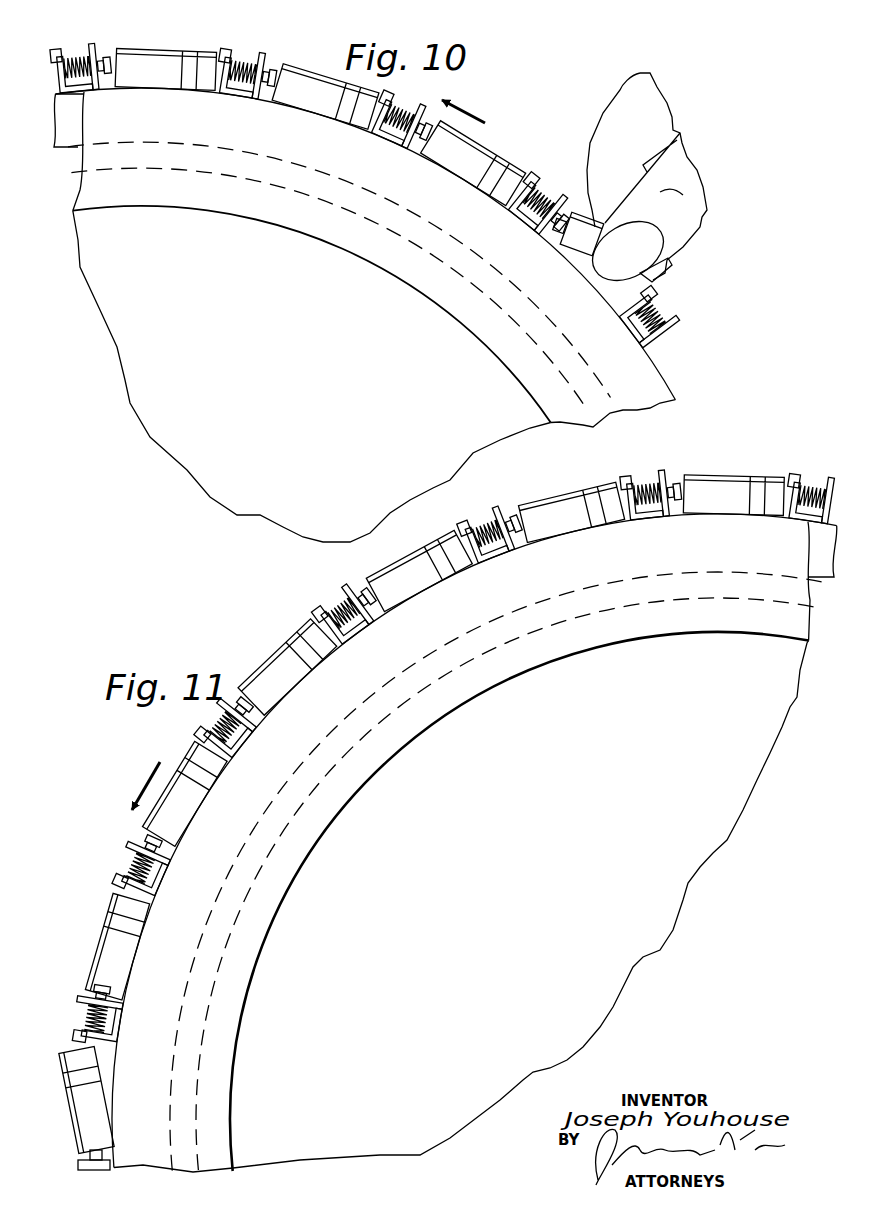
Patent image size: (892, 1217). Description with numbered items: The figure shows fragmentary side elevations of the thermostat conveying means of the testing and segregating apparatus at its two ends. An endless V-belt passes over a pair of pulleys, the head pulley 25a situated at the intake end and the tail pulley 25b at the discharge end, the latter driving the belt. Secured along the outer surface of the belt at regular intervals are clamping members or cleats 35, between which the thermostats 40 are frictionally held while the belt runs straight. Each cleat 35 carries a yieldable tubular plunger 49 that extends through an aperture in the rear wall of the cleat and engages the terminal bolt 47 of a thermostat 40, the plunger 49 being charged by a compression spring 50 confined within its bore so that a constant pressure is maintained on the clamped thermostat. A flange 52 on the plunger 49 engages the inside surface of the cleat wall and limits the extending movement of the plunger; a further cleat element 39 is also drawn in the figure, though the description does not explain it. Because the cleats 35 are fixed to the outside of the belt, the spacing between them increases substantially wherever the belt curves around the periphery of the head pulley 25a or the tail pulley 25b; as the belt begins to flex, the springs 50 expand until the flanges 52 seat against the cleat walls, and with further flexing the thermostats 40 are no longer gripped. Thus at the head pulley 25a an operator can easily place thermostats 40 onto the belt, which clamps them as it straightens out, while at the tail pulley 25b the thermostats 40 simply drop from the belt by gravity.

In FIG. 10, the head pulley 25a is at (453, 190).
In FIG. 11, the tail pulley 25b is at (325, 690).
In FIG. 10, the cleat 35 is at (89, 46).
In FIG. 11, the cleat 35 is at (811, 480).
In FIG. 10, the end block 39 is at (62, 52).
In FIG. 11, the end block 39 is at (789, 482).
In FIG. 10, the thermostat 40 is at (163, 54).
In FIG. 11, the thermostat 40 is at (739, 477).
In FIG. 10, the bolt 47 is at (112, 64).
In FIG. 11, the bolt 47 is at (683, 490).
In FIG. 10, the plunger 49 is at (106, 60).
In FIG. 11, the plunger 49 is at (677, 490).
In FIG. 10, the compression spring 50 is at (80, 48).
In FIG. 11, the compression spring 50 is at (645, 485).
In FIG. 10, the flange 52 is at (384, 195).
In FIG. 11, the flange 52 is at (668, 480).